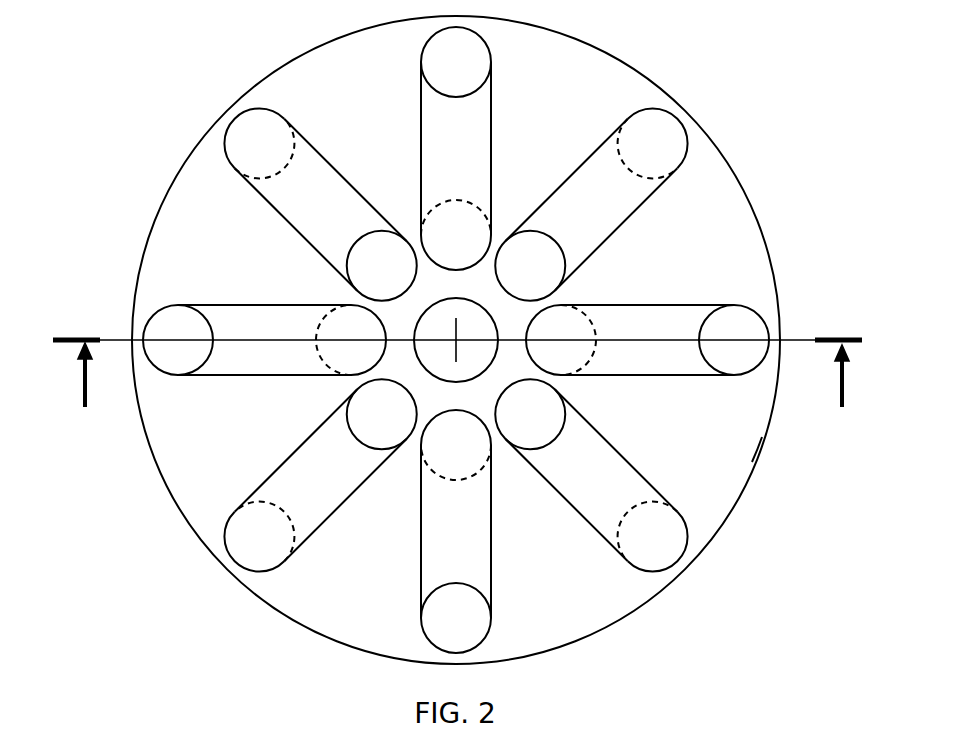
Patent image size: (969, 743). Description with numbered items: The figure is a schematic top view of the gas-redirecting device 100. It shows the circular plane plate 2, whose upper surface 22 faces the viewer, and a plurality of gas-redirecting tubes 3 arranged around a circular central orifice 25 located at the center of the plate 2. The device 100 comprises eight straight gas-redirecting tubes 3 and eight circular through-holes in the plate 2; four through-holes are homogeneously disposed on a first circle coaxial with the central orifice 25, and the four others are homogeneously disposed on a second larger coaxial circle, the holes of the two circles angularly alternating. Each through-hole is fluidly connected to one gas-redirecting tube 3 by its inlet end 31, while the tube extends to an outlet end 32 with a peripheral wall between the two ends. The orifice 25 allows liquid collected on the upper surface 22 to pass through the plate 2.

The gas-redirecting device 100 is at (122, 172).
The plate 2 is at (227, 444).
The gas-redirecting tube 3 is at (493, 115).
The upper surface 22 is at (703, 472).
The orifice 25 is at (453, 362).
The inlet end 31 is at (658, 140).
The outlet end 32 is at (737, 340).